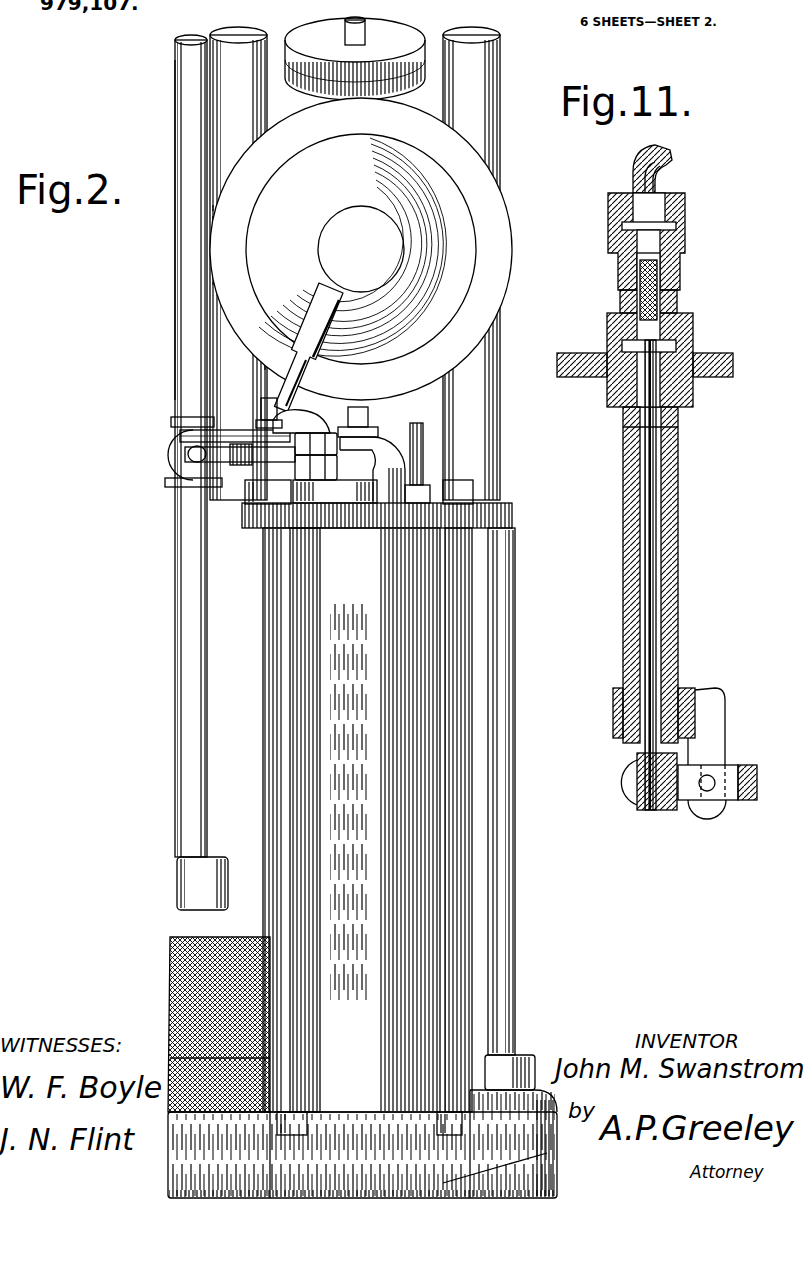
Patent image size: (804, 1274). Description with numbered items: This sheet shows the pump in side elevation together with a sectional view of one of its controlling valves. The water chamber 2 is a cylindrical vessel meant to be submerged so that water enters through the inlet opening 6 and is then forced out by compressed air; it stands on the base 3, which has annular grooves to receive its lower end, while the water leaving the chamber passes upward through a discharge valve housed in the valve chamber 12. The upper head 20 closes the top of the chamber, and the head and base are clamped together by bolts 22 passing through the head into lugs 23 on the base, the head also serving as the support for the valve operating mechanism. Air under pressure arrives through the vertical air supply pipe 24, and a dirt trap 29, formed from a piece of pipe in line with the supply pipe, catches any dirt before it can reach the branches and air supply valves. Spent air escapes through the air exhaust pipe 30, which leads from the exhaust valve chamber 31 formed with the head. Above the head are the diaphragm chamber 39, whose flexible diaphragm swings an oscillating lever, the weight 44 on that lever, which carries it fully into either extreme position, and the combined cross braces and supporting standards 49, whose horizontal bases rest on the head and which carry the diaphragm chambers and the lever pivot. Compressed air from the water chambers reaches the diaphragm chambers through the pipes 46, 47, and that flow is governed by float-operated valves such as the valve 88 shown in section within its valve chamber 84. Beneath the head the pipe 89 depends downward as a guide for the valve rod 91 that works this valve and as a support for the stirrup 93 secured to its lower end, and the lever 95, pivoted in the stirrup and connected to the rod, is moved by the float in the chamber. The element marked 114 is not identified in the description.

In FIG. 2, the water chamber 2 is at (351, 820).
In FIG. 2, the base 3 is at (547, 1153).
In FIG. 2, the inlet opening 6 is at (200, 482).
In FIG. 2, the valve chamber 12 is at (533, 1186).
In FIG. 2, the upper head 20 is at (338, 513).
In FIG. 11, the upper head 20 is at (714, 370).
In FIG. 2, the bolts 22 is at (283, 590).
In FIG. 2, the lugs 23 is at (447, 1118).
In FIG. 2, the air supply pipe 24 is at (186, 118).
In FIG. 2, the dirt trap 29 is at (197, 694).
In FIG. 2, the air exhaust pipe 30 is at (228, 64).
In FIG. 2, the exhaust valve chamber 31 is at (388, 472).
In FIG. 2, the diaphragm chamber 39 is at (458, 242).
In FIG. 2, the weight 44 is at (355, 58).
In FIG. 2, the pipe 46 is at (309, 417).
In FIG. 2, the pipe 47 is at (298, 383).
In FIG. 11, the pipe 47 is at (668, 170).
In FIG. 2, the combined cross braces and supporting standards 49 is at (262, 404).
In FIG. 11, the valve chamber 84 is at (682, 280).
In FIG. 11, the valve 88 is at (628, 257).
In FIG. 11, the pipe 89 is at (672, 546).
In FIG. 11, the valve rod 91 is at (656, 619).
In FIG. 11, the stirrup 93 is at (735, 688).
In FIG. 11, the lever 95 is at (758, 752).
In FIG. 2, the tube 114 is at (480, 594).